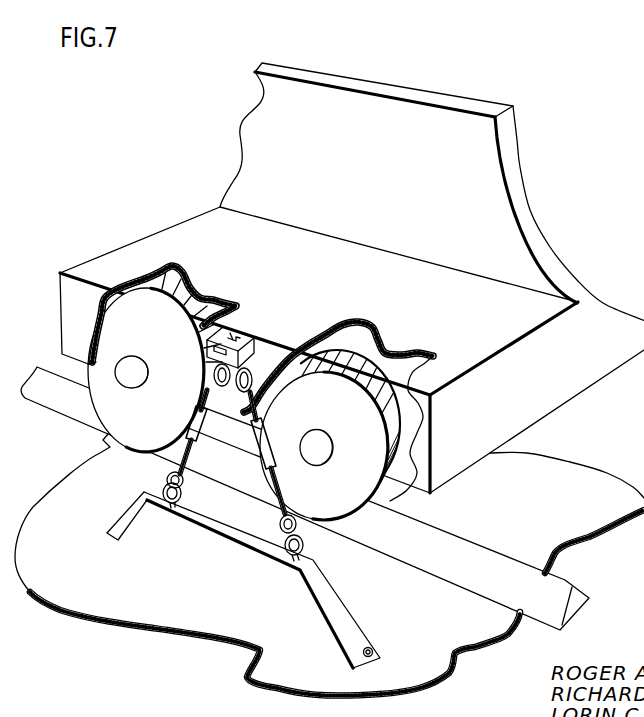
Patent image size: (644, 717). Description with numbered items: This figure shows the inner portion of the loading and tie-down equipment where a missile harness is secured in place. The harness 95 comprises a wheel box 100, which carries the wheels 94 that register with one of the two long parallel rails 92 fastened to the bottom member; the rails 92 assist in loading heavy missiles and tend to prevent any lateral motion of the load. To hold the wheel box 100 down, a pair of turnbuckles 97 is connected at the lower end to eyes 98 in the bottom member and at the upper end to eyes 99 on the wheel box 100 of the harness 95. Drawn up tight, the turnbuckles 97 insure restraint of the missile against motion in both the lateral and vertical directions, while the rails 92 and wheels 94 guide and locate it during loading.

The rail 92 is at (305, 498).
The wheel 94 is at (150, 347).
The harness 95 is at (523, 193).
The turnbuckle 97 is at (189, 453).
The eye 98 is at (181, 494).
The eye 99 is at (214, 378).
The wheel box 100 is at (462, 324).